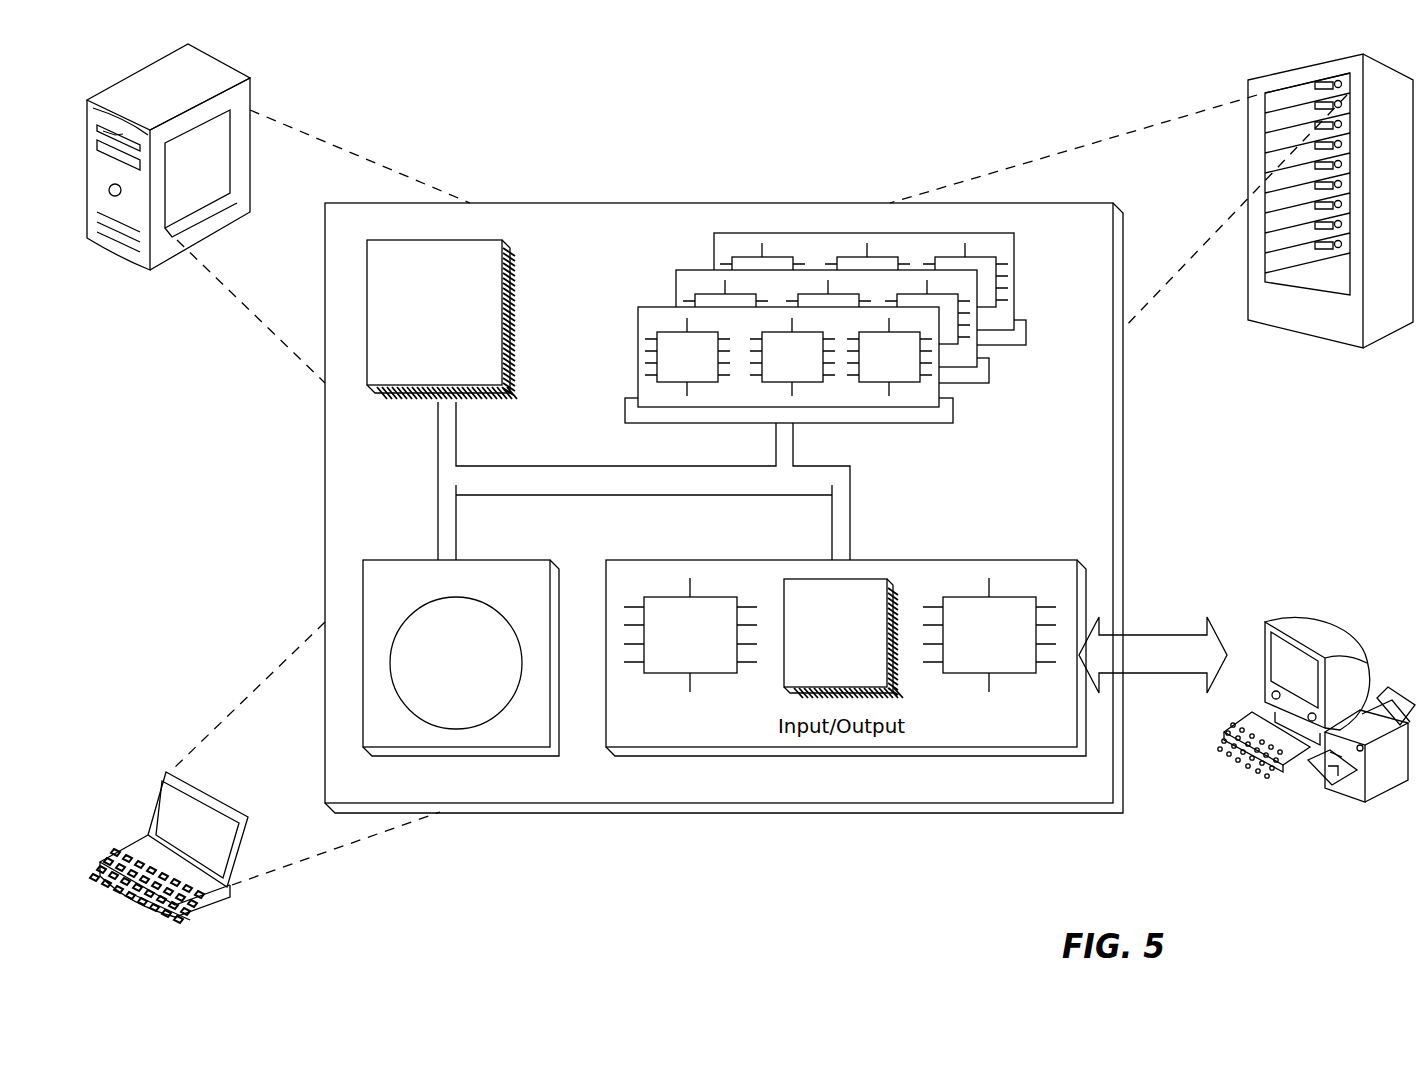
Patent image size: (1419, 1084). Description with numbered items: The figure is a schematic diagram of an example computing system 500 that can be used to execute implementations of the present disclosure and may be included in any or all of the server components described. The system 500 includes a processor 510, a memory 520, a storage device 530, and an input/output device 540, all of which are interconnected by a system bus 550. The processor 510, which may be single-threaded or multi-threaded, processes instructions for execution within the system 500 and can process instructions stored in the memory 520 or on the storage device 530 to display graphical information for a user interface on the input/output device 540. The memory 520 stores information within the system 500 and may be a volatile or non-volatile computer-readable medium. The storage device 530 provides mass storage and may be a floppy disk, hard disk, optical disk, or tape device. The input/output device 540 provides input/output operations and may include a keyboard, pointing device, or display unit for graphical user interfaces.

The computing system 500 is at (537, 115).
The processor 510 is at (498, 376).
The memory 520 is at (1020, 383).
The storage device 530 is at (541, 739).
The input/output device 540 is at (1265, 630).
The system bus 550 is at (638, 485).